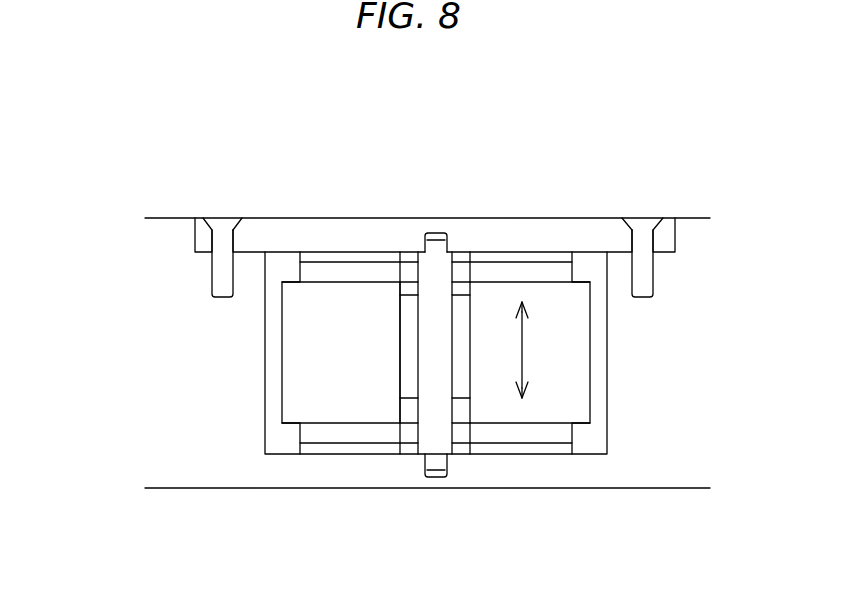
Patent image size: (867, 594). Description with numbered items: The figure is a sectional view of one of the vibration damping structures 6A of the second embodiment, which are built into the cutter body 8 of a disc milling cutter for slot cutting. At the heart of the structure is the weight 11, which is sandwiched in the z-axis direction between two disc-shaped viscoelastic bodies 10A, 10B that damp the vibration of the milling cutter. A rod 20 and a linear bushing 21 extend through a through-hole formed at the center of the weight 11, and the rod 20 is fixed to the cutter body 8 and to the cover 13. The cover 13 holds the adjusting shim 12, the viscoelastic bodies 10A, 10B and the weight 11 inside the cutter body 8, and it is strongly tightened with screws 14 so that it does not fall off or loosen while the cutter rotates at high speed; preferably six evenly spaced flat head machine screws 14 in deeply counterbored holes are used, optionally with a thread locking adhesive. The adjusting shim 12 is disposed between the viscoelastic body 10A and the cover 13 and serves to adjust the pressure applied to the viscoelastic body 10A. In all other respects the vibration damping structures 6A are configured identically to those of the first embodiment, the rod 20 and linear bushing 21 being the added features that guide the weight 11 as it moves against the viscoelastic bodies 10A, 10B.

The vibration damping structure 6A is at (360, 195).
The cutter body 8 is at (178, 367).
The cover 13 is at (488, 235).
The screw 14 is at (227, 230).
The adjusting shim 12 is at (560, 252).
The viscoelastic body 10A is at (550, 272).
The viscoelastic body 10B is at (555, 432).
The linear bushing 21 is at (407, 363).
The weight 11 is at (563, 360).
The rod 20 is at (432, 432).